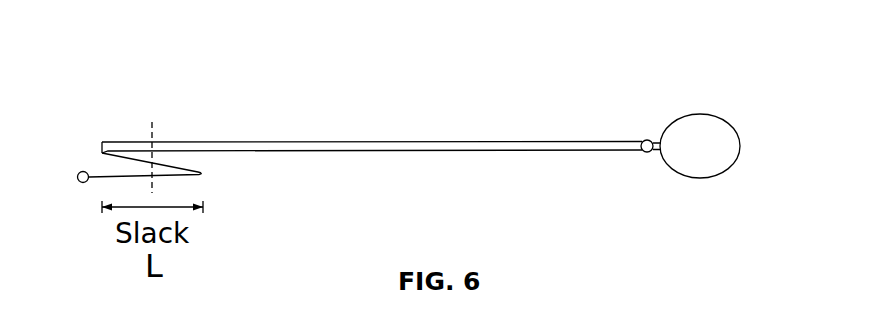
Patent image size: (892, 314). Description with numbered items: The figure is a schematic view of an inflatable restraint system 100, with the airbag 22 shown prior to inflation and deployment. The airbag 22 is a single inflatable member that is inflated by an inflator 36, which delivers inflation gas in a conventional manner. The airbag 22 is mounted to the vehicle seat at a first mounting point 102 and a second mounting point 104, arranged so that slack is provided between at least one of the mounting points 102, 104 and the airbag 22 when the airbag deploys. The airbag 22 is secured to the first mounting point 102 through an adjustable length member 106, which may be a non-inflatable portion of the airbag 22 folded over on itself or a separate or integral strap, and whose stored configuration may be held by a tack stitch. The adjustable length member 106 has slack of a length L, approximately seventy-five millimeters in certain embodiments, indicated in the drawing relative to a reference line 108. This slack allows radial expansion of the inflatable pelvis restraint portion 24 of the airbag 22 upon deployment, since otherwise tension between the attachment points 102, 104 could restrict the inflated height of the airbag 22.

The inflatable restraint system 100 is at (163, 63).
The airbag 22 is at (410, 130).
The inflatable pelvis restraint portion 24 is at (345, 151).
The inflator 36 is at (702, 114).
The first mounting point 102 is at (82, 183).
The second mounting point 104 is at (646, 153).
The adjustable length member 106 is at (170, 163).
The reference line 108 is at (157, 133).